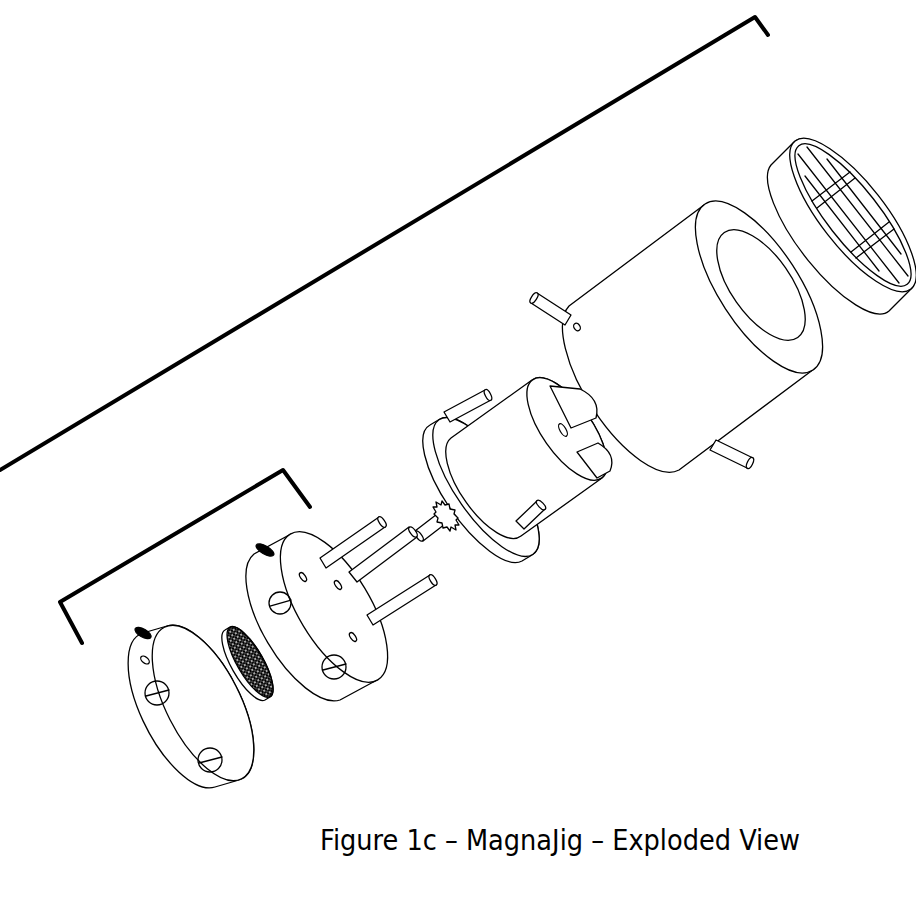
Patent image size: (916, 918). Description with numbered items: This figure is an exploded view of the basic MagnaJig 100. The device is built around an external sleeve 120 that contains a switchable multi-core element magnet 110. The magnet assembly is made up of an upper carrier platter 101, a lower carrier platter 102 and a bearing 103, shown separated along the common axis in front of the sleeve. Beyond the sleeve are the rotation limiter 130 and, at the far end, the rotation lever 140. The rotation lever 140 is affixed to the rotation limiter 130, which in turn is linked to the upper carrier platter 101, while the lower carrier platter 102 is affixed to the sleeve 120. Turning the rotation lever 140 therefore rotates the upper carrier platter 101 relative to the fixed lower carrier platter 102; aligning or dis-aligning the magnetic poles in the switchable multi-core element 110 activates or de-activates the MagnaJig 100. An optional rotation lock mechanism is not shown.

The MagnaJig 100 is at (384, 243).
The switchable multi-core element magnet 110 is at (281, 633).
The upper carrier platter 101 is at (393, 670).
The lower carrier platter 102 is at (238, 725).
The bearing 103 is at (277, 689).
The external sleeve 120 is at (632, 295).
The rotation limiter 130 is at (560, 492).
The rotation lever 140 is at (785, 182).